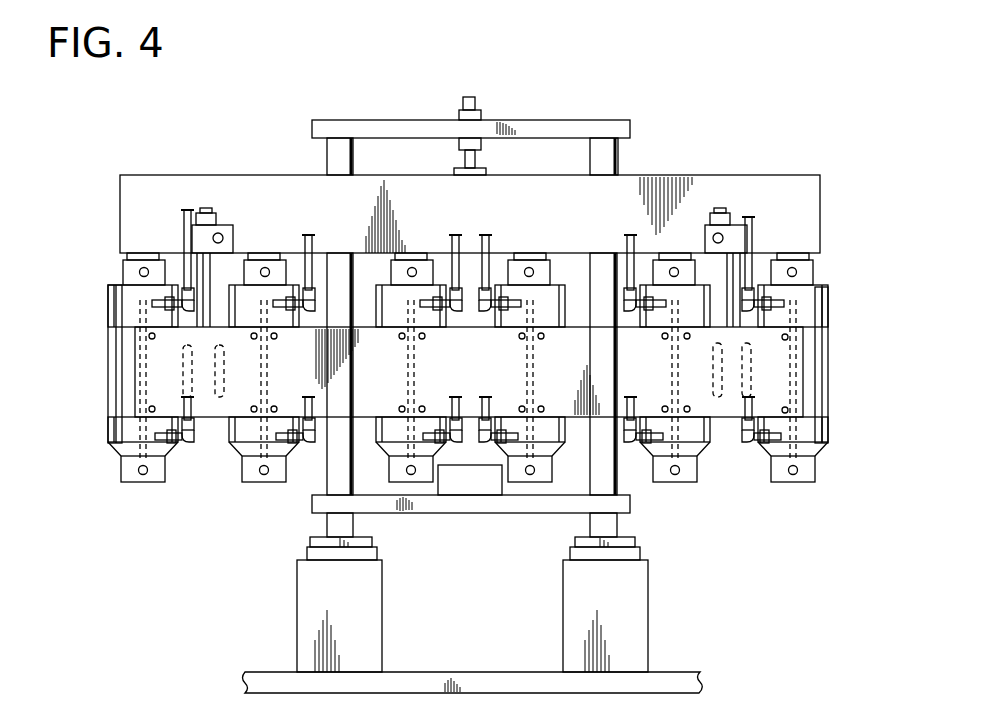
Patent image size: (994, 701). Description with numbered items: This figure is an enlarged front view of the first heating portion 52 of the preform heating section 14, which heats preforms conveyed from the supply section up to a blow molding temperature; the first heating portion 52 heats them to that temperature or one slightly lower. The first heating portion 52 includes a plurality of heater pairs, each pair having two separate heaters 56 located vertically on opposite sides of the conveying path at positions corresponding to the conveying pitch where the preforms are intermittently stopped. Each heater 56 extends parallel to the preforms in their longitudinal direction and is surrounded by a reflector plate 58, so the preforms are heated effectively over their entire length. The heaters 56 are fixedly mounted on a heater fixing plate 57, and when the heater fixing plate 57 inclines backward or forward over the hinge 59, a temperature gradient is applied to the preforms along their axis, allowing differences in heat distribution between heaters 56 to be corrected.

The preform heating section 14 is at (795, 78).
The first heating portion 52 is at (683, 150).
The heater 56 is at (140, 427).
The heater fixing plate 57 is at (783, 392).
The reflector plate 58 is at (112, 413).
The hinge 59 is at (206, 398).